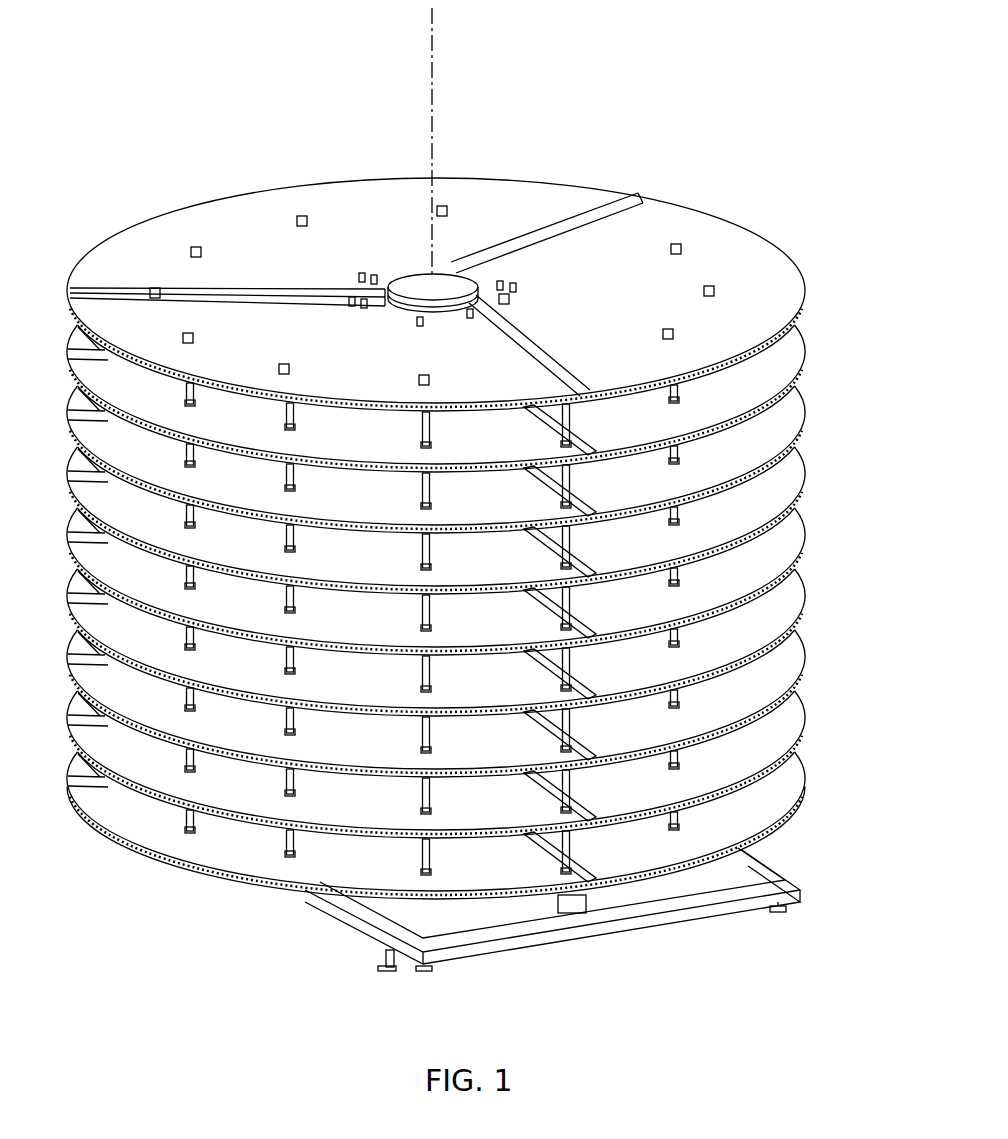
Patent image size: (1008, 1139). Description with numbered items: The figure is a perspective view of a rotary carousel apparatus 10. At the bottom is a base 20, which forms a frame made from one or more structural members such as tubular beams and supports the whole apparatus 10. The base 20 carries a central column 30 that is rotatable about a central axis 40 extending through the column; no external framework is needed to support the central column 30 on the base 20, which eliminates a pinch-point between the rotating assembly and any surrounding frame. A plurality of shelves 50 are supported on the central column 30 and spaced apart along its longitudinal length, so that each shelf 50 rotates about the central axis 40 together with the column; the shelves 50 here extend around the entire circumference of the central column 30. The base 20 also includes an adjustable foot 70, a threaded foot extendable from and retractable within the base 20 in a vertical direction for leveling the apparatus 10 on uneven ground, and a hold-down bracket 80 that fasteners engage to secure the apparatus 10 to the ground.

The rotary carousel apparatus 10 is at (532, 59).
The base 20 is at (667, 918).
The central column 30 is at (400, 285).
The central axis 40 is at (433, 98).
The shelf 50 is at (805, 543).
The adjustable foot 70 is at (783, 915).
The hold-down bracket 80 is at (385, 968).